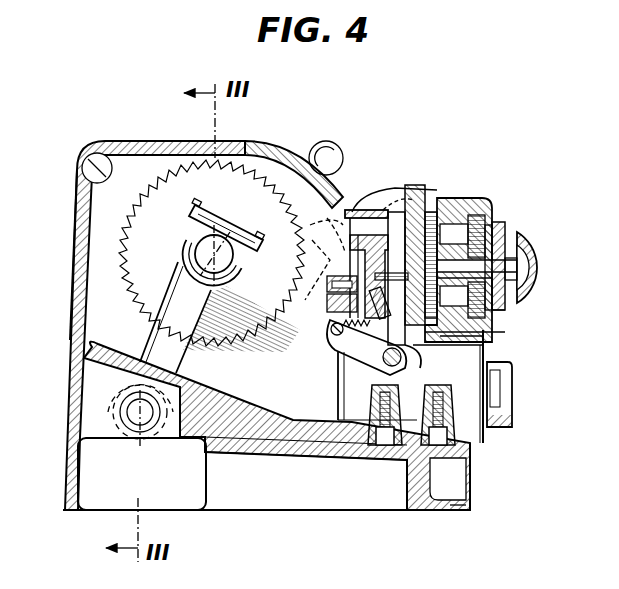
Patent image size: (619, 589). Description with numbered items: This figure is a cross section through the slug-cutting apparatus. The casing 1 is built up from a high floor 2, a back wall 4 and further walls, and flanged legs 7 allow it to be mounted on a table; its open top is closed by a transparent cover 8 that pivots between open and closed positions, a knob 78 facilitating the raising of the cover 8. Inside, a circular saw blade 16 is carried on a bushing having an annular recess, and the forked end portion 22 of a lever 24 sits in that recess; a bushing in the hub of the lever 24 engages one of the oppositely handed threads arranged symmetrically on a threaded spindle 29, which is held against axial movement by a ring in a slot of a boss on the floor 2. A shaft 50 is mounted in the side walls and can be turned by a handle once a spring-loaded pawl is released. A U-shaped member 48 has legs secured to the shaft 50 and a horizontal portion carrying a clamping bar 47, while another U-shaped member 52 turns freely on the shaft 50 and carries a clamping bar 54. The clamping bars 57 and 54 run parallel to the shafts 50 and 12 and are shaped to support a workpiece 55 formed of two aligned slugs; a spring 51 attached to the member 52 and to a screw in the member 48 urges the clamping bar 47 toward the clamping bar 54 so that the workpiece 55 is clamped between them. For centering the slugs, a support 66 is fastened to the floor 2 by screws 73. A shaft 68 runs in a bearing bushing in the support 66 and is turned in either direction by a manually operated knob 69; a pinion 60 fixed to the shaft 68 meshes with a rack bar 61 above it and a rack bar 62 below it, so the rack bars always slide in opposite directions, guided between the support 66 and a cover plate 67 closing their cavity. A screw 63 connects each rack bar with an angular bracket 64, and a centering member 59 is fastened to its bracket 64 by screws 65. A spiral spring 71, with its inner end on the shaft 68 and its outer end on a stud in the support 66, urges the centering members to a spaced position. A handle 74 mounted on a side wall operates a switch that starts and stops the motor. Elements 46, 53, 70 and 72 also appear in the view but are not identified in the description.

The casing 1 is at (66, 381).
The high floor 2 is at (238, 402).
The back wall 4 is at (80, 206).
The flanged legs 7 is at (450, 505).
The cover 8 is at (149, 141).
The shaft 12 is at (195, 256).
The circular saw blade 16 is at (246, 150).
The forked end portion 22 is at (196, 218).
The lever 24 is at (156, 340).
The threaded spindle 29 is at (152, 440).
The pawl assembly 46 is at (330, 350).
The clamping bar 47 is at (398, 205).
The U-shaped member 48 is at (411, 395).
The shaft 50 is at (370, 365).
The spring 51 is at (366, 347).
The U-shaped member 52 is at (336, 332).
The stop block 53 is at (327, 296).
The clamping bar 54 is at (343, 232).
The workpiece 55 is at (344, 226).
The clamping bar 57 is at (538, 226).
The centering member 59 is at (373, 207).
The pinion 60 is at (470, 285).
The rack bar 61 is at (460, 197).
The rack bar 62 is at (450, 338).
The screw 63 is at (476, 210).
The angular bracket 64 is at (417, 190).
The screws 65 is at (396, 210).
The support 66 is at (485, 332).
The cover plate 67 is at (432, 210).
The shaft 68 is at (482, 262).
The knob 69 is at (534, 250).
The pinion 70 is at (486, 282).
The spiral spring 71 is at (492, 310).
The hub 72 is at (496, 222).
The screws 73 is at (306, 476).
The handle 74 is at (495, 428).
The knob 78 is at (322, 150).